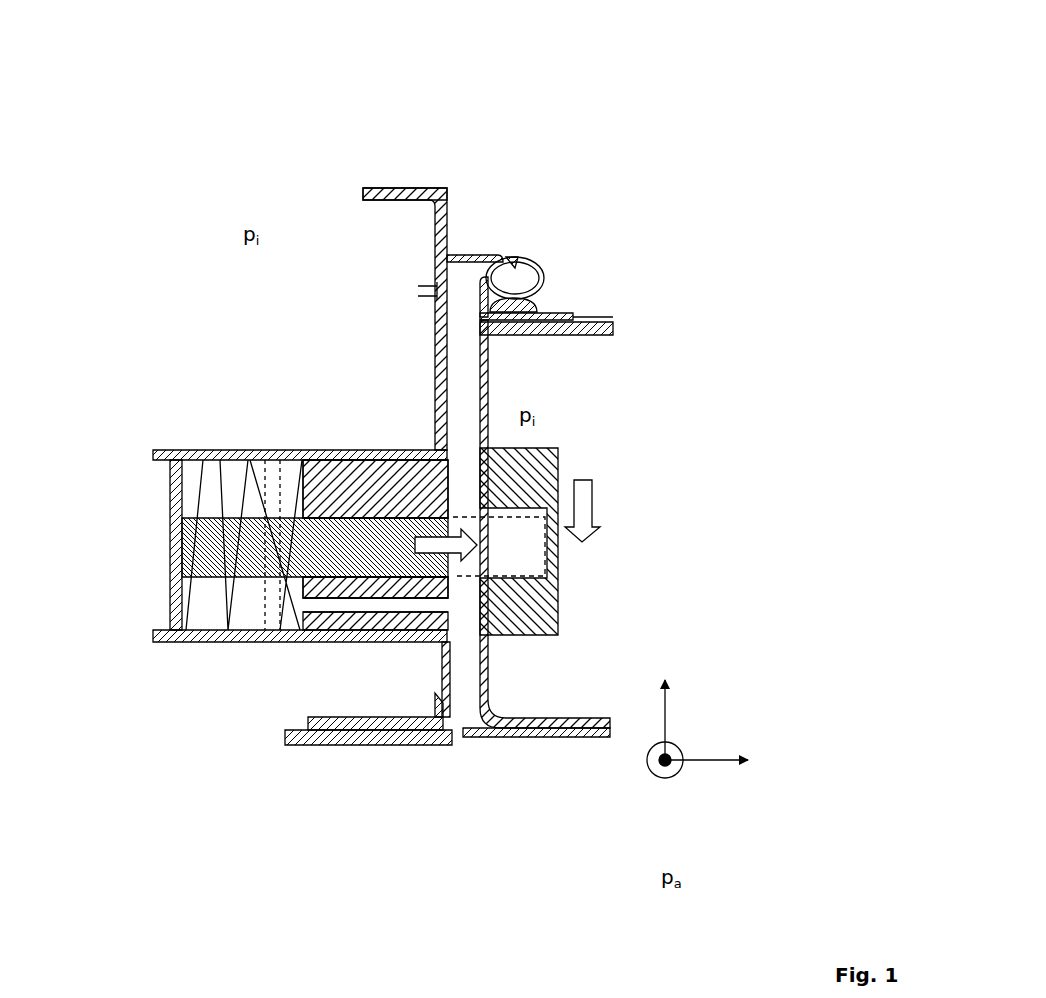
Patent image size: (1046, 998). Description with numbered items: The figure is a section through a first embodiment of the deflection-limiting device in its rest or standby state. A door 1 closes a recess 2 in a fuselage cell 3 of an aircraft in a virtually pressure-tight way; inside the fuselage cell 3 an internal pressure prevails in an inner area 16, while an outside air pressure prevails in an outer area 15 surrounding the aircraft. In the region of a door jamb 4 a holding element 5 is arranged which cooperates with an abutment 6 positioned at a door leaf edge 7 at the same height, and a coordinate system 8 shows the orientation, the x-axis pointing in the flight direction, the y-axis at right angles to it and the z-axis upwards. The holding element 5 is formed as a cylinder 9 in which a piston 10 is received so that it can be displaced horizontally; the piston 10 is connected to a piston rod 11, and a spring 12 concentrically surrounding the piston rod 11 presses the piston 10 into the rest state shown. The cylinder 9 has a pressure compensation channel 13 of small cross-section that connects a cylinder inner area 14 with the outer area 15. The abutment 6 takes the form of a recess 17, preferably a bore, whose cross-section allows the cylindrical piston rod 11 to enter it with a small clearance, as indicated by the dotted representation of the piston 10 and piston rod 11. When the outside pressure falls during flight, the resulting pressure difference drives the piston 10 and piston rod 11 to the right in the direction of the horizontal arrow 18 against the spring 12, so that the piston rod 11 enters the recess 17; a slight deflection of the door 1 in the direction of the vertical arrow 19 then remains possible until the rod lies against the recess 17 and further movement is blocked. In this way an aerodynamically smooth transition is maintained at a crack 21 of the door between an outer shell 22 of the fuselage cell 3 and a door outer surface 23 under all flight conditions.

The door 1 is at (612, 330).
The recess 2 is at (647, 245).
The fuselage cell 3 is at (452, 70).
The door jamb 4 is at (435, 392).
The holding element 5 is at (244, 664).
The abutment 6 is at (583, 437).
The door leaf edge 7 is at (488, 383).
The coordinate system 8 is at (668, 752).
The cylinder 9 is at (330, 447).
The piston 10 is at (182, 527).
The piston rod 11 is at (335, 562).
The spring 12 is at (222, 470).
The pressure compensation channel 13 is at (358, 600).
The cylinder inner area 14 is at (235, 615).
The outer area 15 is at (476, 891).
The inner area 16 is at (387, 245).
The recess 17 is at (513, 545).
The horizontal arrow 18 is at (433, 510).
The vertical arrow 19 is at (585, 505).
The crack 21 is at (458, 757).
The outer shell 22 is at (372, 745).
The door outer surface 23 is at (547, 733).